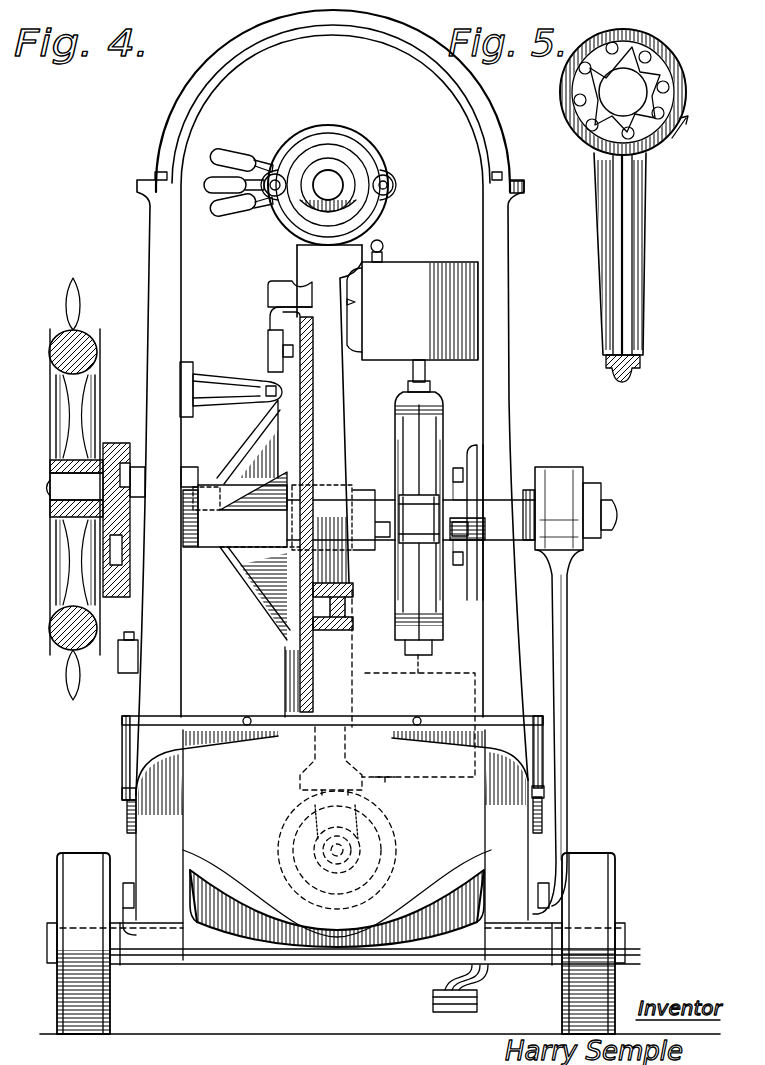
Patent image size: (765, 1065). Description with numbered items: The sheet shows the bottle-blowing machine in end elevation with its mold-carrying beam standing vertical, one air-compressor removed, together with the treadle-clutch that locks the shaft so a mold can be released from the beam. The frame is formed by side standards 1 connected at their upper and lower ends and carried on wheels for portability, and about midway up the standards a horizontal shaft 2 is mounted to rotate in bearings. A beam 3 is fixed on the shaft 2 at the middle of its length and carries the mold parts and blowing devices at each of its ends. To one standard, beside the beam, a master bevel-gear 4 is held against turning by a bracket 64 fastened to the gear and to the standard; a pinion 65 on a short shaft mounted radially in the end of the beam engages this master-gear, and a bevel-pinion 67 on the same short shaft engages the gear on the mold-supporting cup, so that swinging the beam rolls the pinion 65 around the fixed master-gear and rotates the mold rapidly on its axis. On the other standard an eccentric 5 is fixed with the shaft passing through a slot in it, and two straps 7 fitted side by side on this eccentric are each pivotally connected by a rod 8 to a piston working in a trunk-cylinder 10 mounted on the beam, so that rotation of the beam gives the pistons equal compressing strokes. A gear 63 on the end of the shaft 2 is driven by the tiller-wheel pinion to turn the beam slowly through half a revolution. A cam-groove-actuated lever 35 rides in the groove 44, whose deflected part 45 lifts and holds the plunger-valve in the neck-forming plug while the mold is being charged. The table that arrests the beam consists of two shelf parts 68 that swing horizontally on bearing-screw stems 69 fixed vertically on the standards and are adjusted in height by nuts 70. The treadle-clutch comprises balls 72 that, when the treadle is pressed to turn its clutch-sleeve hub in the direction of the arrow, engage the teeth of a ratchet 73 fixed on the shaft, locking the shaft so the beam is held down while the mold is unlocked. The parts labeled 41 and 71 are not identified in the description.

In FIG. 4, the side standards 1 is at (380, 522).
In FIG. 4, the horizontal shaft 2 is at (386, 548).
In FIG. 5, the horizontal shaft 2 is at (600, 95).
In FIG. 4, the beam 3 is at (352, 470).
In FIG. 4, the master bevel-gear 4 is at (313, 440).
In FIG. 4, the eccentric 5 is at (437, 425).
In FIG. 4, the straps 7 is at (494, 331).
In FIG. 4, the rod 8 is at (425, 372).
In FIG. 4, the trunk-cylinder 10 is at (412, 311).
In FIG. 4, the cam-groove-actuated lever 35 is at (300, 282).
In FIG. 4, the cable 41 is at (433, 1002).
In FIG. 4, the groove 44 is at (467, 519).
In FIG. 4, the deflected part of the groove 45 is at (462, 475).
In FIG. 4, the gear 63 is at (113, 458).
In FIG. 4, the bracket 64 is at (262, 381).
In FIG. 4, the pinion 65 is at (278, 318).
In FIG. 4, the bevel-pinion 67 is at (56, 414).
In FIG. 4, the shelf parts 68 is at (245, 717).
In FIG. 4, the bearing-screw stem 69 is at (126, 826).
In FIG. 4, the nuts 70 is at (123, 890).
In FIG. 4, the lever 71 is at (568, 690).
In FIG. 5, the lever 71 is at (640, 258).
In FIG. 5, the balls 72 is at (578, 120).
In FIG. 5, the ratchet 73 is at (655, 90).